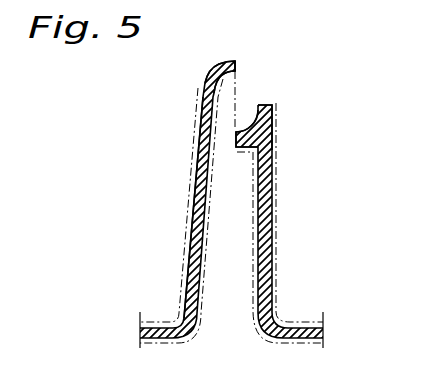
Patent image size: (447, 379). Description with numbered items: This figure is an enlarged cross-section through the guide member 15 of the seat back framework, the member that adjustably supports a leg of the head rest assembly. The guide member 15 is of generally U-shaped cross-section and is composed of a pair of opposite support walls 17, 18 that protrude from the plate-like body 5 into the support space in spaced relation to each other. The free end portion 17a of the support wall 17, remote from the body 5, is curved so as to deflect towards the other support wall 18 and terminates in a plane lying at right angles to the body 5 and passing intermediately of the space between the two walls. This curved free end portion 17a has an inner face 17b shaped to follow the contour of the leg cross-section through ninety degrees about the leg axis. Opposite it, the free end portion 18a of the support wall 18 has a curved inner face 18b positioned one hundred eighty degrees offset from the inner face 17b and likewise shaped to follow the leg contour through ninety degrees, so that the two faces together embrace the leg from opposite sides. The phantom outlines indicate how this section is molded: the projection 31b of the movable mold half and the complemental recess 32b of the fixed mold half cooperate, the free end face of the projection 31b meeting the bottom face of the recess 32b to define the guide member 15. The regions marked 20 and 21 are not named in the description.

The plate-like body 5 is at (148, 338).
The guide member 15 is at (233, 57).
The support wall 17 is at (203, 191).
The free end portion of the support wall 17a is at (218, 64).
The inner face 17b is at (201, 116).
The support wall 18 is at (264, 212).
The free end portion of the support wall 18a is at (261, 135).
The curved inner face 18b is at (248, 121).
The bottom space 20 is at (248, 357).
The inner space 21 is at (338, 126).
The projection 31b is at (209, 229).
The recess 32b is at (236, 60).